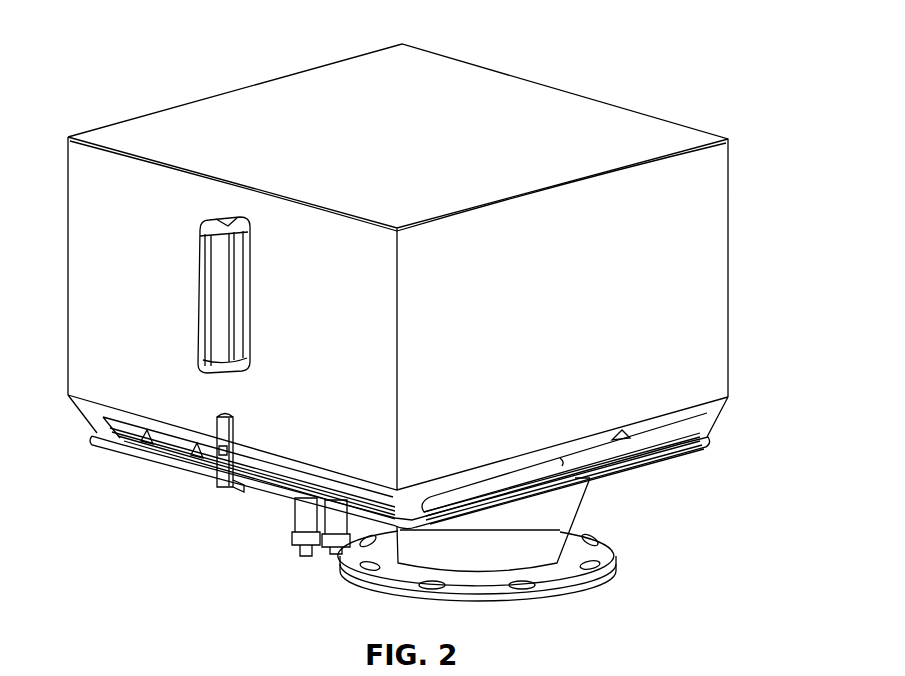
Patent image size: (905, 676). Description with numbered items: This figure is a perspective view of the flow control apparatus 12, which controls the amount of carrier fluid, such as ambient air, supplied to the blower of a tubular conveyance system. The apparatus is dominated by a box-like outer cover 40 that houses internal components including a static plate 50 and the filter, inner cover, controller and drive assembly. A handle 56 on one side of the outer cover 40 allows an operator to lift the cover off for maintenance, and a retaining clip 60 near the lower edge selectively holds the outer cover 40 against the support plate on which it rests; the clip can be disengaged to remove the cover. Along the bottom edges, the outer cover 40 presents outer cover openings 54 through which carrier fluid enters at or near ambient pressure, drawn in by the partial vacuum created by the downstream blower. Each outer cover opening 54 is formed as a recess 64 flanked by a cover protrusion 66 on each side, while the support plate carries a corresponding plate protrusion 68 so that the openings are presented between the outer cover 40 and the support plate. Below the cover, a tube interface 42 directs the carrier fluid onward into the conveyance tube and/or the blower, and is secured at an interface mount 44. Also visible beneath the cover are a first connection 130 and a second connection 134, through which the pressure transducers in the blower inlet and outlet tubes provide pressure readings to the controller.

The flow control apparatus 12 is at (94, 38).
The outer cover 40 is at (572, 108).
The tube interface 42 is at (618, 538).
The interface mount 44 is at (580, 577).
The static plate 50 is at (627, 466).
The outer cover opening 54 is at (150, 440).
The handle 56 is at (205, 278).
The retaining clip 60 is at (236, 425).
The recess 64 is at (200, 456).
The cover protrusion 66 is at (95, 425).
The plate protrusion 68 is at (103, 448).
The first connection 130 is at (340, 552).
The second connection 134 is at (298, 546).